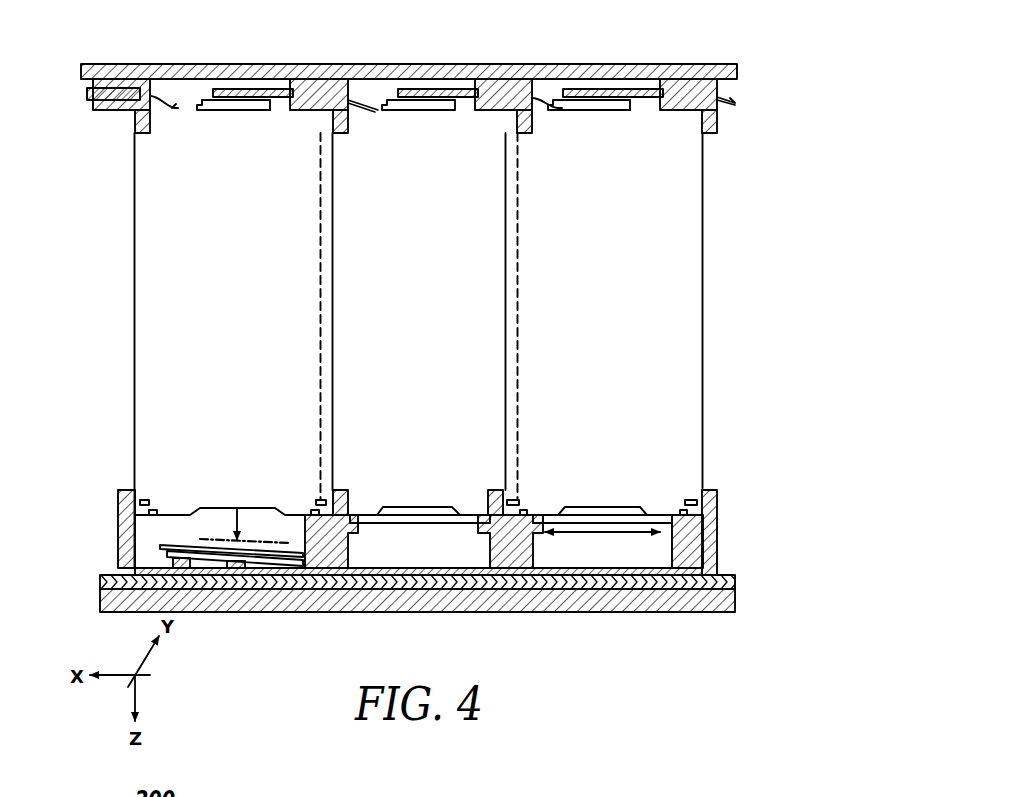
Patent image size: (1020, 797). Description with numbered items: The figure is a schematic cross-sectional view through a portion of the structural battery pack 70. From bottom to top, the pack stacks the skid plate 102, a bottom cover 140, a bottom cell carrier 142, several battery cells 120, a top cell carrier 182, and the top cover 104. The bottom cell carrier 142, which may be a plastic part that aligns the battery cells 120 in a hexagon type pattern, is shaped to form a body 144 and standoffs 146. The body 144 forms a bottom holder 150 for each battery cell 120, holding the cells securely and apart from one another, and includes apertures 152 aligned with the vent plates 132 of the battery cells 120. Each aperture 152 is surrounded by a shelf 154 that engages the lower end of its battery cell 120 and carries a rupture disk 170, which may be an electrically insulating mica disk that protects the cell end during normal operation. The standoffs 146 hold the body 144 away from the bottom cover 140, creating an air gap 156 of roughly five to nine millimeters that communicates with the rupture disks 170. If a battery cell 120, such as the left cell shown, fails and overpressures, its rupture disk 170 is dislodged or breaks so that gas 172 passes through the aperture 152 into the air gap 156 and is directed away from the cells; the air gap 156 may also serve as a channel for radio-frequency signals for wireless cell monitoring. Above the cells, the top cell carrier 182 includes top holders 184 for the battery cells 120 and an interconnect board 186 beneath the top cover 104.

The structural battery pack 70 is at (133, 56).
The skid plate 102 is at (705, 612).
The top cover 104 is at (738, 76).
The battery cells 120 is at (253, 326).
The vent plates 132 is at (203, 538).
The bottom cover 140 is at (735, 583).
The bottom cell carrier 142 is at (460, 526).
The body 144 is at (722, 490).
The standoffs 146 is at (718, 566).
The bottom holders 150 is at (118, 510).
The apertures 152 is at (602, 547).
The shelves 154 is at (357, 528).
The air gap 156 is at (142, 538).
The rupture disks 170 is at (602, 508).
The gas 172 is at (239, 512).
The top cell carrier 182 is at (747, 80).
The top holders 184 is at (722, 110).
The interconnect board 186 is at (307, 90).